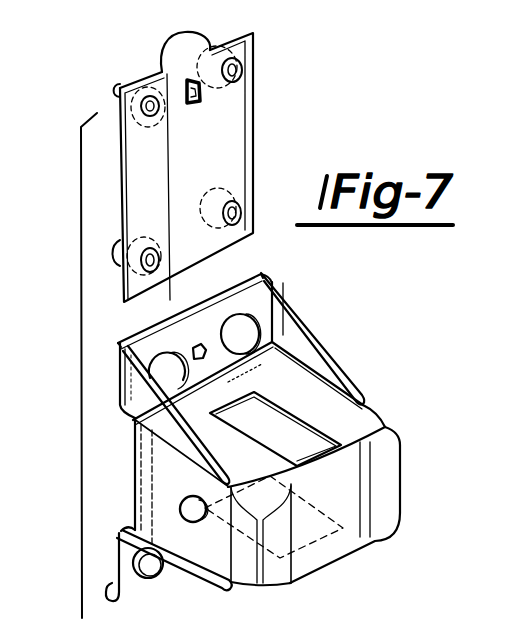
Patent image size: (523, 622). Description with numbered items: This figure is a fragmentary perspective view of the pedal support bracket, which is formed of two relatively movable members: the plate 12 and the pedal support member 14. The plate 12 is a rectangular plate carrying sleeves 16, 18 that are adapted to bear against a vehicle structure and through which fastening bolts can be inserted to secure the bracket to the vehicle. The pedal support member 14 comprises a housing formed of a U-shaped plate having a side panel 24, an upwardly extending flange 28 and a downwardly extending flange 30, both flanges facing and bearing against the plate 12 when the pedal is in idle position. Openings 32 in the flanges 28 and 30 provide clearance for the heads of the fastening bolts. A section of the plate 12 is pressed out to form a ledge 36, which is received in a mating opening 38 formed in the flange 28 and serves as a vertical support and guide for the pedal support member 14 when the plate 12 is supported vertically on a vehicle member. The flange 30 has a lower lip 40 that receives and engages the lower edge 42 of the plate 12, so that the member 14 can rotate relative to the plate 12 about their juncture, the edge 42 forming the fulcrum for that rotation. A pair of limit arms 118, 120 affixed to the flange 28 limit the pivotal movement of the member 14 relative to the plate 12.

The plate 12 is at (253, 143).
The pedal support member 14 is at (228, 369).
The sleeve 16 is at (210, 50).
The sleeve 18 is at (122, 88).
The side panel 24 is at (160, 466).
The upwardly extending flange 28 is at (171, 345).
The downwardly extending flange 30 is at (119, 547).
The opening 32 is at (156, 382).
The ledge 36 is at (201, 97).
The mating opening 38 is at (197, 345).
The lower lip 40 is at (106, 594).
The lower edge 42 is at (254, 237).
The limit arm 118 is at (118, 345).
The limit arm 120 is at (262, 278).